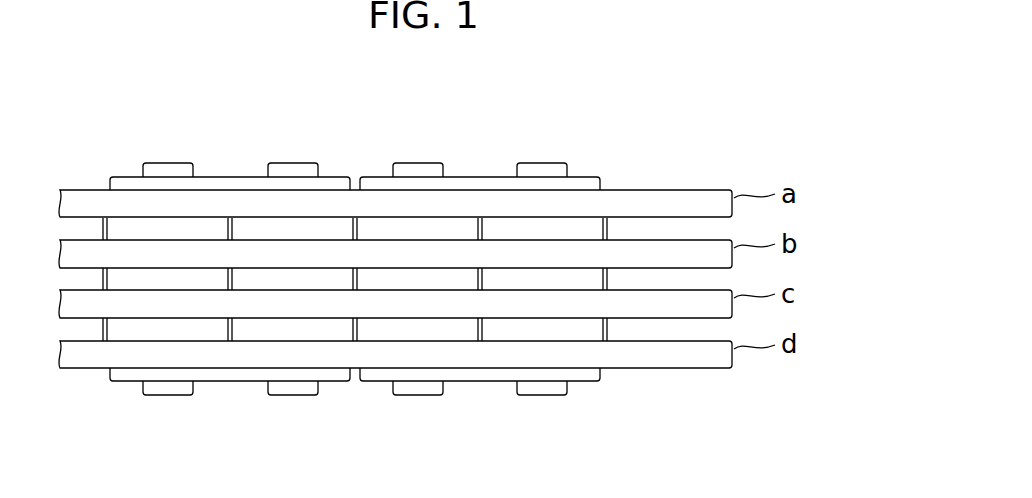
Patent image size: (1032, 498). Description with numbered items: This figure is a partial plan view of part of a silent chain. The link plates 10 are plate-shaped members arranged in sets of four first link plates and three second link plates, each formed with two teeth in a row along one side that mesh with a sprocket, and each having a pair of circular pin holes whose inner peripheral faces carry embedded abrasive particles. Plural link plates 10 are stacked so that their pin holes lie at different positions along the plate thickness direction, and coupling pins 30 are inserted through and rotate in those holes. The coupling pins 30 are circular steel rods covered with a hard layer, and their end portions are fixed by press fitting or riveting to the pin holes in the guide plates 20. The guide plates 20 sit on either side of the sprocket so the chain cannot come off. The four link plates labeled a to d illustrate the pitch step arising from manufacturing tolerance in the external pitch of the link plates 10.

The link plate 10 is at (125, 210).
The guide plate 20 is at (202, 177).
The coupling pin 30 is at (168, 163).